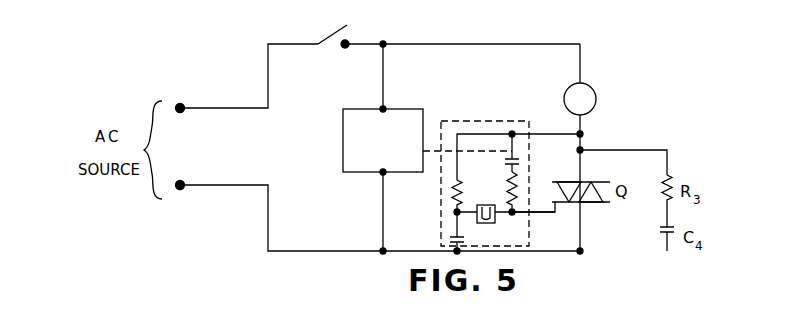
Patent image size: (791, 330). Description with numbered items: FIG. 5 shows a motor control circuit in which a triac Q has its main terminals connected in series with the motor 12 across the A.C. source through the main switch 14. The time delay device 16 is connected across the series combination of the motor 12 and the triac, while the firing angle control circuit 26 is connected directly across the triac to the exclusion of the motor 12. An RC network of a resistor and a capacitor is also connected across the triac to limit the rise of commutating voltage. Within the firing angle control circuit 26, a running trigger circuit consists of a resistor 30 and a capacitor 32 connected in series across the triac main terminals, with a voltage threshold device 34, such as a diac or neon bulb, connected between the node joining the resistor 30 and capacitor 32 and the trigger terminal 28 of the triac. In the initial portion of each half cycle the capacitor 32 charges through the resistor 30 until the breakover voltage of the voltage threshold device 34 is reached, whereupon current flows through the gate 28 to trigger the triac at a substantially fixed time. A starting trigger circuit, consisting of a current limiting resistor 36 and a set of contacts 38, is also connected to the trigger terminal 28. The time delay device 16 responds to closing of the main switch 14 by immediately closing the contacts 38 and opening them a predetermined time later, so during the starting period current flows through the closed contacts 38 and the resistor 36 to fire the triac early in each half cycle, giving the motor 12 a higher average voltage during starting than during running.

The motor 12 is at (585, 84).
The main switch 14 is at (348, 27).
The time delay device 16 is at (403, 109).
The firing angle control circuit 26 is at (476, 121).
The trigger terminal 28 is at (563, 203).
The resistor 30 is at (456, 182).
The capacitor 32 is at (454, 236).
The voltage threshold device 34 is at (477, 193).
The current limiting resistor 36 is at (516, 181).
The contacts 38 is at (518, 158).